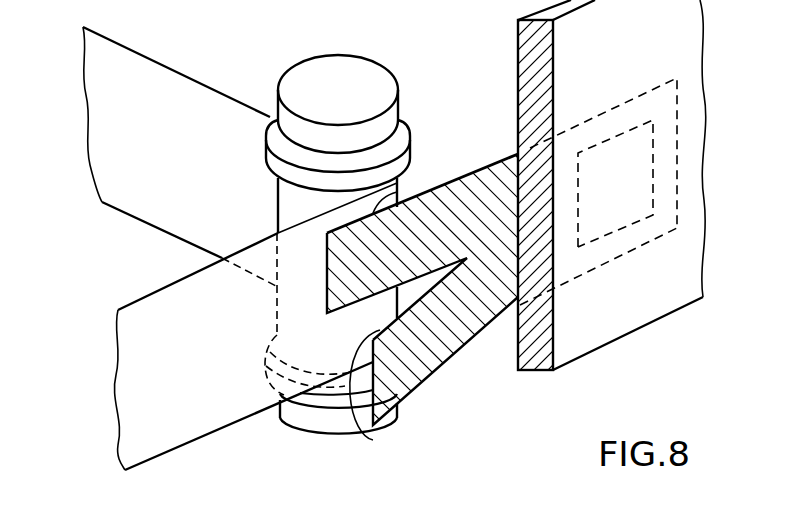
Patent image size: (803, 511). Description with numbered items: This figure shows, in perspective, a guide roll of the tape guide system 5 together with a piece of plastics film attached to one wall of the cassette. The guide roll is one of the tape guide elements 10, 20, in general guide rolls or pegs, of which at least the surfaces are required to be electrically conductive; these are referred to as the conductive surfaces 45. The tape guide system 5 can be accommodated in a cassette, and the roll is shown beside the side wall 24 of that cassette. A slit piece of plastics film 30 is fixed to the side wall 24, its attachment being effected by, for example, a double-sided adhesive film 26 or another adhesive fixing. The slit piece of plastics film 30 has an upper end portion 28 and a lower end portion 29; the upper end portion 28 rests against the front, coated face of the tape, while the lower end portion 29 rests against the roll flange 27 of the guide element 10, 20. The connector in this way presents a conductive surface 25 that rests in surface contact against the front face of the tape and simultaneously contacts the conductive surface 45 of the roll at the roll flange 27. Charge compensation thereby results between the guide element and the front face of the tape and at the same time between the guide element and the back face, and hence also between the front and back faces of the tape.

The tape guide system 5 is at (166, 398).
The tape guide element 10 is at (373, 82).
The tape guide element 20 is at (383, 180).
The side wall 24 is at (540, 352).
The conductive surface 25 is at (360, 436).
The double-sided adhesive film 26 is at (625, 213).
The roll flange 27 is at (322, 400).
The upper end portion 28 is at (398, 193).
The lower end portion 29 is at (433, 372).
The slit piece of plastics film 30 is at (486, 167).
The conductive surface 45 is at (278, 212).